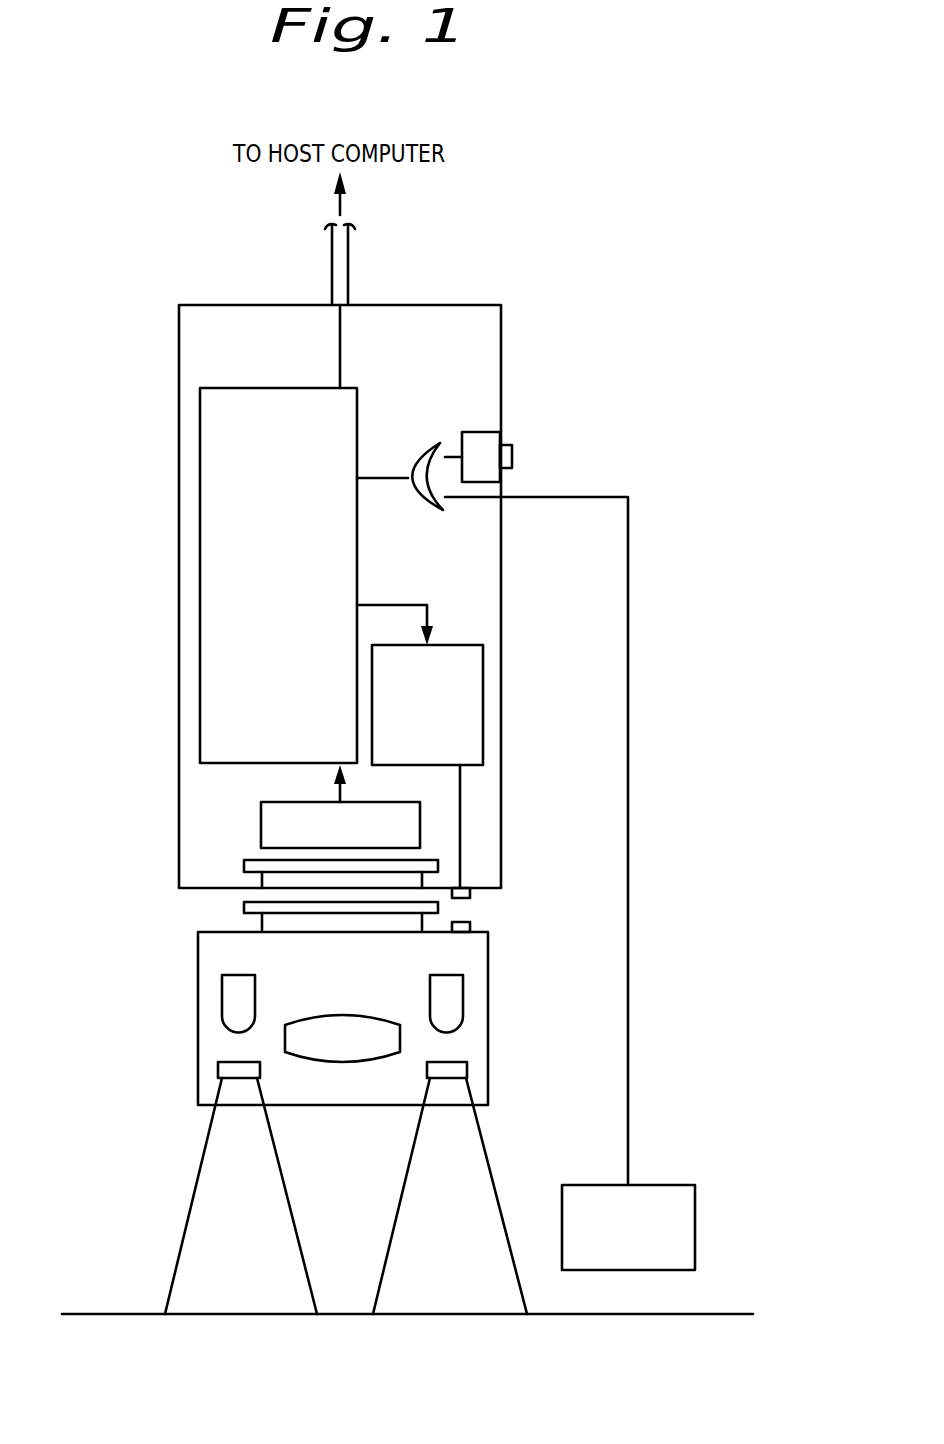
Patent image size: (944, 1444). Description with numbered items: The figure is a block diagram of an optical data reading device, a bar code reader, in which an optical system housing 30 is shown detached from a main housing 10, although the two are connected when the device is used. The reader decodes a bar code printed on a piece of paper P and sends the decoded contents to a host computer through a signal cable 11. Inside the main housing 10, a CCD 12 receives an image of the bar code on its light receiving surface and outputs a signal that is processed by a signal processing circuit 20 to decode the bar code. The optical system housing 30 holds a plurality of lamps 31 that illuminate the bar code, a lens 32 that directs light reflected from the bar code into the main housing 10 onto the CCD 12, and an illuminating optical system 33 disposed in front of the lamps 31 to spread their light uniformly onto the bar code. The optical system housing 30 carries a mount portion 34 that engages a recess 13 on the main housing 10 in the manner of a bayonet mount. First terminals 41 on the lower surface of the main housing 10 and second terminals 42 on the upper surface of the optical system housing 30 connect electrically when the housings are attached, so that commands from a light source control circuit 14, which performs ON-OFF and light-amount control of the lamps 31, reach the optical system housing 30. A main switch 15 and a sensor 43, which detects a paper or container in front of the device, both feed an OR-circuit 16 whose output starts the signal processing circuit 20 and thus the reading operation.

The main housing 10 is at (165, 652).
The signal cable 11 is at (349, 265).
The CCD 12 is at (261, 826).
The recess 13 is at (418, 882).
The light source control circuit 14 is at (483, 690).
The main switch 15 is at (491, 441).
The OR-circuit 16 is at (420, 448).
The signal processing circuit 20 is at (200, 552).
The optical system housing 30 is at (178, 1020).
The lamps 31 is at (232, 995).
The lens 32 is at (342, 1025).
The illuminating optical system 33 is at (218, 1069).
The mount portion 34 is at (262, 922).
The first terminals 41 is at (470, 893).
The second terminals 42 is at (470, 925).
The sensor 43 is at (656, 1185).
The paper P is at (95, 1314).